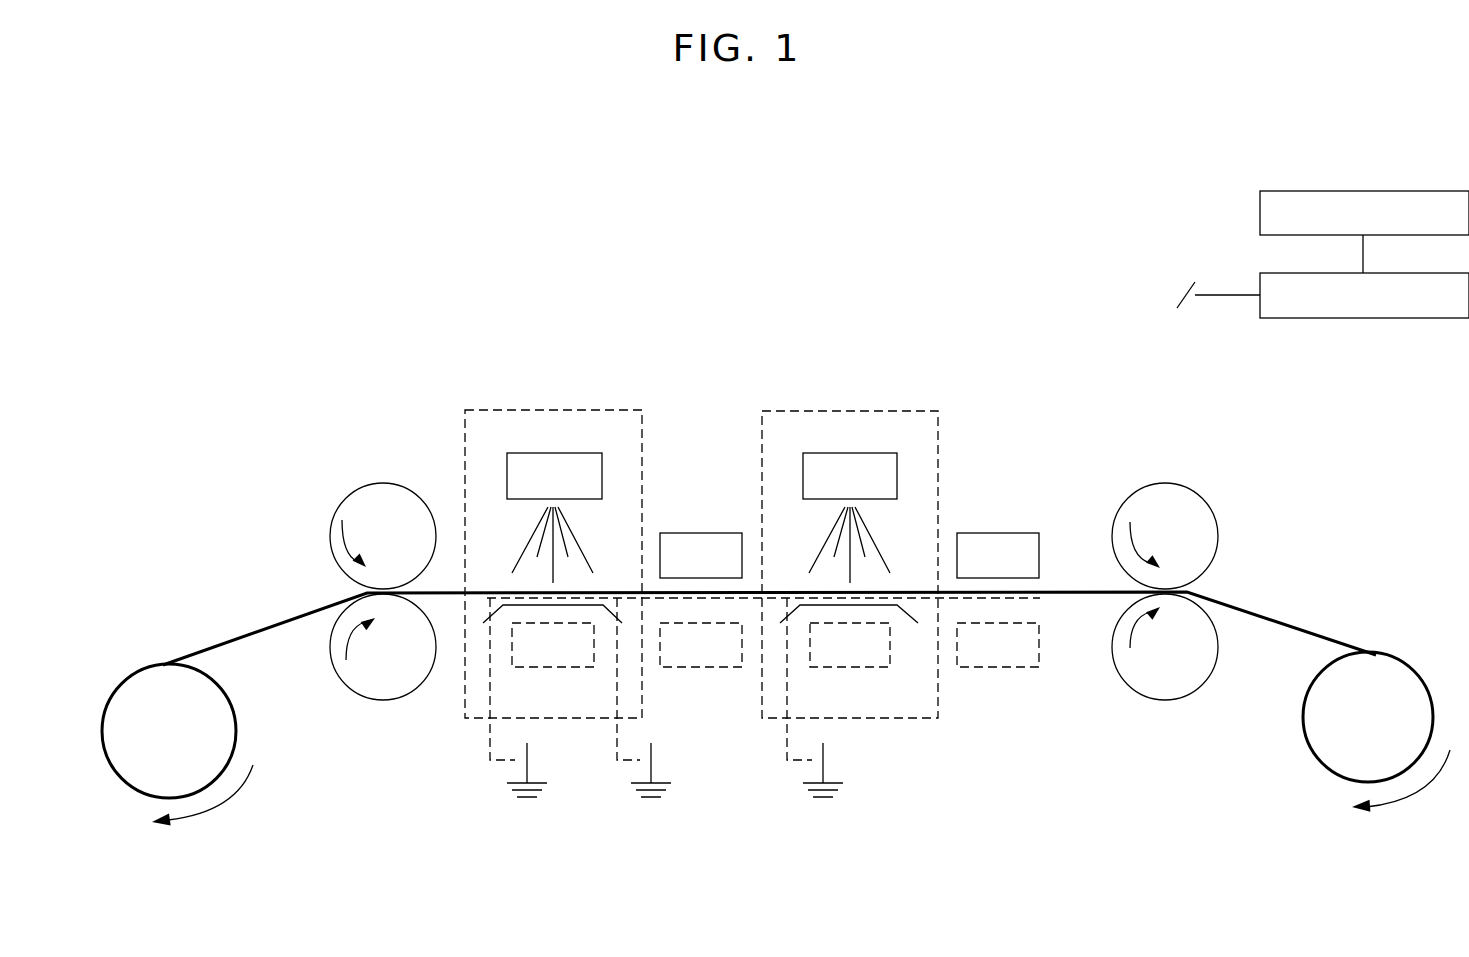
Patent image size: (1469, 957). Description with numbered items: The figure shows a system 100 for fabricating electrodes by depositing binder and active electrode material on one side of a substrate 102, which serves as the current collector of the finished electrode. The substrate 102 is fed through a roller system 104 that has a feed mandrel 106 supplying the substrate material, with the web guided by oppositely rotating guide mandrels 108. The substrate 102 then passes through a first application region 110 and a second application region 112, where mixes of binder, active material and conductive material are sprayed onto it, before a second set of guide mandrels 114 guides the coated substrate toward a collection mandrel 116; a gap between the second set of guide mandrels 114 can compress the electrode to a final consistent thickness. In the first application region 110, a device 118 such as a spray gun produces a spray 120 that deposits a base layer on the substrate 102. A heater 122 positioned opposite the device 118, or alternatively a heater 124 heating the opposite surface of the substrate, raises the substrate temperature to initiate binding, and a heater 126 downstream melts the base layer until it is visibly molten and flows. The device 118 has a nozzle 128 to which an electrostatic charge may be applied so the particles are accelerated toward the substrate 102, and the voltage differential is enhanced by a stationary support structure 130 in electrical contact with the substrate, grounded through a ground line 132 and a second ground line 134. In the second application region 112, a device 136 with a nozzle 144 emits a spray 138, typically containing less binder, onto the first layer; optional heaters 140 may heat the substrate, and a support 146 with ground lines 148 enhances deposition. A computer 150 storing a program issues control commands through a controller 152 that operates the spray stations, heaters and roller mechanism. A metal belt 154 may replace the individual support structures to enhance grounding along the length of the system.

The system 100 is at (1013, 344).
The substrate 102 is at (443, 598).
The roller system 104 is at (784, 510).
The feed mandrel 106 is at (115, 690).
The guide mandrels 108 is at (338, 500).
The first application region 110 is at (553, 410).
The second application region 112 is at (850, 410).
The second set of guide mandrels 114 is at (1143, 488).
The collection mandrel 116 is at (1322, 765).
The device 118 is at (585, 453).
The spray 120 is at (605, 506).
The heater 122 is at (568, 667).
The heater 124 is at (740, 667).
The heater 126 is at (730, 533).
The nozzle 128 is at (472, 484).
The support structure 130 is at (483, 623).
The ground line 132 is at (490, 760).
The second ground line 134 is at (617, 760).
The device 136 is at (880, 453).
The spray 138 is at (902, 506).
The heaters 140 is at (866, 667).
The nozzle 144 is at (771, 484).
The support 146 is at (915, 625).
The ground lines 148 is at (787, 760).
The computer 150 is at (1425, 191).
The controller 152 is at (1430, 318).
The metal belt 154 is at (678, 603).